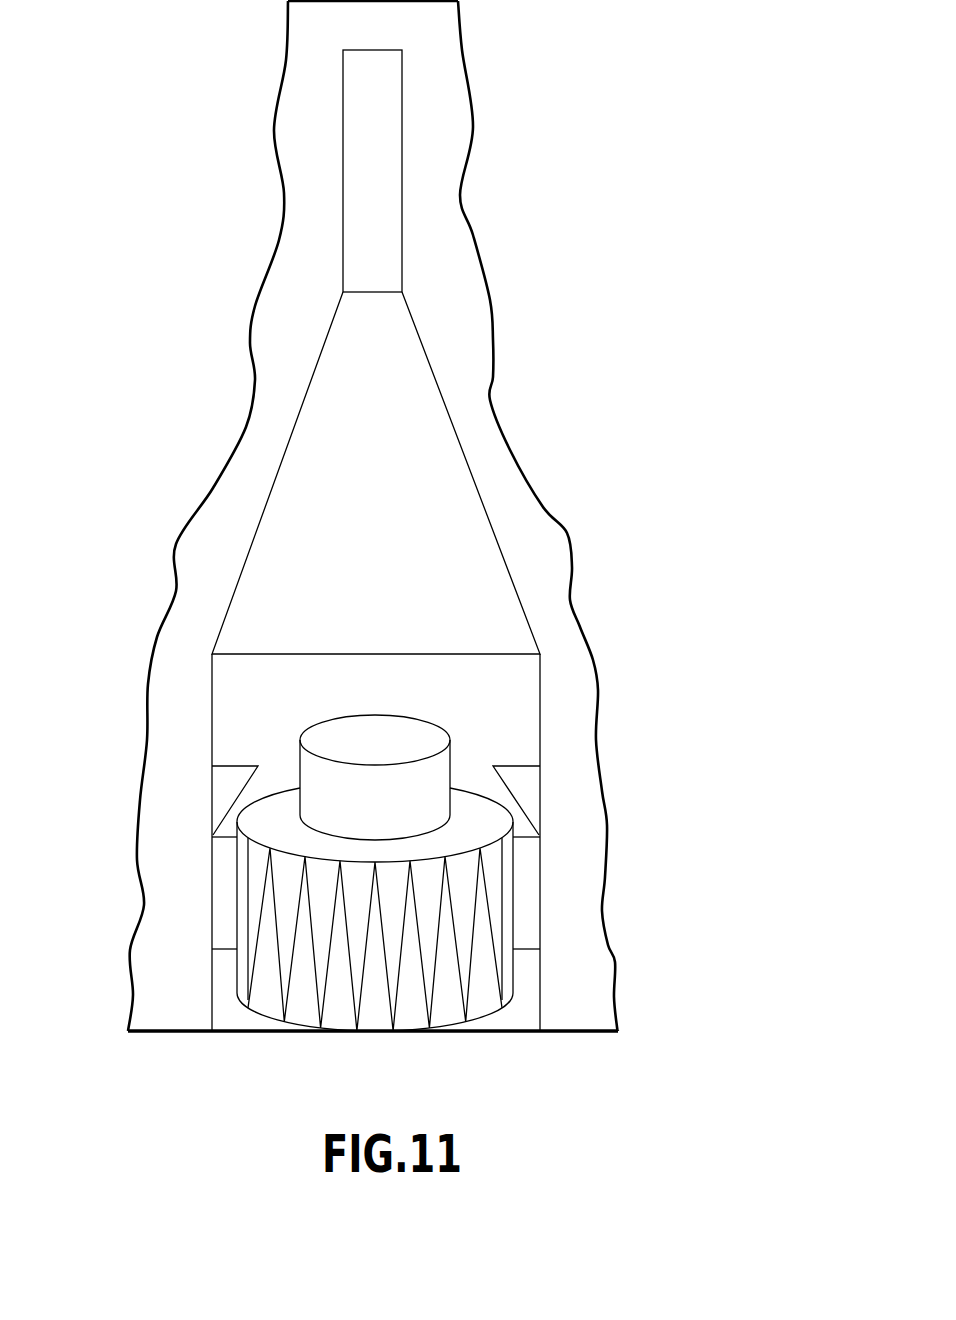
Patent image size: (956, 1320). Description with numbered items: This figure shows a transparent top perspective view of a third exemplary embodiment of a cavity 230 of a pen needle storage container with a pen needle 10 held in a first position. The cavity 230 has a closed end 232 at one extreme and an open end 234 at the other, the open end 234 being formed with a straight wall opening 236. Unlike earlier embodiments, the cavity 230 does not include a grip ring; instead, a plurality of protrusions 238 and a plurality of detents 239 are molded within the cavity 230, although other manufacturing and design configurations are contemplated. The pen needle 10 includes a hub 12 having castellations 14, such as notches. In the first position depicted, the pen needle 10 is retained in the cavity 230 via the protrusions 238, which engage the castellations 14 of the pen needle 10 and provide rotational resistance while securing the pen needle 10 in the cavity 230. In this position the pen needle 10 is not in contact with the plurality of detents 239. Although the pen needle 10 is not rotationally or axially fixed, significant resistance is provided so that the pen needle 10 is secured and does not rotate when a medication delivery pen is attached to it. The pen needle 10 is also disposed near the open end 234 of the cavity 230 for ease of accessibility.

The closed end 232 is at (382, 48).
The cavity 230 is at (378, 413).
The pen needle 10 is at (450, 762).
The detent 239 is at (222, 785).
The protrusion 238 is at (528, 901).
The straight wall opening 236 is at (210, 978).
The hub 12 is at (513, 990).
The castellation 14 is at (285, 997).
The open end 234 is at (513, 1032).